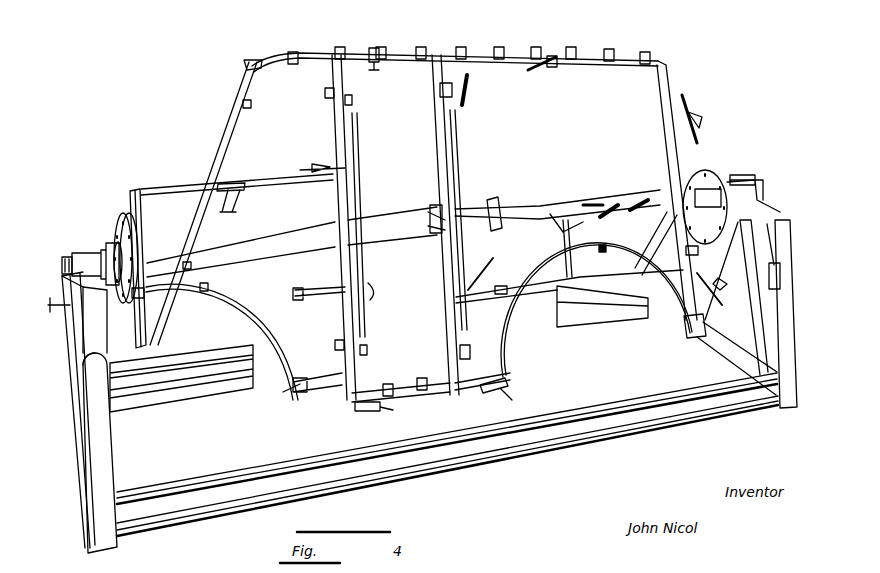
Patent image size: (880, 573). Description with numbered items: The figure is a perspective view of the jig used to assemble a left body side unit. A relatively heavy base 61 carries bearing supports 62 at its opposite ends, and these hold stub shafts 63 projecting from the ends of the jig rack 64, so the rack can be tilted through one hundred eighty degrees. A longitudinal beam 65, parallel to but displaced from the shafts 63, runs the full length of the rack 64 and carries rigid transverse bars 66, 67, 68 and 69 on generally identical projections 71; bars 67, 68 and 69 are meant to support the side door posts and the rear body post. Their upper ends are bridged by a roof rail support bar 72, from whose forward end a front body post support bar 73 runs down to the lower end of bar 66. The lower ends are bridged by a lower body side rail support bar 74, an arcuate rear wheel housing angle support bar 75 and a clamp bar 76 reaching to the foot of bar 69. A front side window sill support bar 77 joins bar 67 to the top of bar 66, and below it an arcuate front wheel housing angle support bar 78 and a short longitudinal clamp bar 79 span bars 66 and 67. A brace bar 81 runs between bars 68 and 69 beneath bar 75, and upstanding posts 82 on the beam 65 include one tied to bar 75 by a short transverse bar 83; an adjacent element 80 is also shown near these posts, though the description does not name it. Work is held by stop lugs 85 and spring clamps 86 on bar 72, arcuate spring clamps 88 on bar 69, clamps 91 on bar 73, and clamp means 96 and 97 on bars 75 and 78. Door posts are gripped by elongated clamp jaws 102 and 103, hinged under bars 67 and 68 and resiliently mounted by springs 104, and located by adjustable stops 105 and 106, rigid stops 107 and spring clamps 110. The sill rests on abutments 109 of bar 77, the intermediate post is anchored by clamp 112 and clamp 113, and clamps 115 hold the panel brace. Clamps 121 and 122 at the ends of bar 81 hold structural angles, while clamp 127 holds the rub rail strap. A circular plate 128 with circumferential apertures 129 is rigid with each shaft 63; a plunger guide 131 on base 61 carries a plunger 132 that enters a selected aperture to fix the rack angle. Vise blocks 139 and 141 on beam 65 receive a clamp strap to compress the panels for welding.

The base 61 is at (589, 437).
The bearing supports 62 is at (74, 254).
The stub shafts 63 is at (64, 259).
The jig rack 64 is at (602, 47).
The longitudinal beam 65 is at (551, 207).
The transverse bar 66 is at (146, 220).
The transverse bar 67 is at (335, 124).
The transverse bar 68 is at (435, 103).
The transverse bar 69 is at (660, 115).
The projections 71 is at (334, 255).
The roof rail support bar 72 is at (369, 47).
The front body post support bar 73 is at (235, 119).
The lower body side rail support bar 74 is at (438, 385).
The rear wheel housing angle support bar 75 is at (515, 352).
The clamp bar 76 is at (693, 342).
The front side window sill support bar 77 is at (269, 187).
The front wheel housing angle support bar 78 is at (263, 340).
The clamp bar 79 is at (325, 375).
The bracket 80 is at (579, 238).
The brace bar 81 is at (553, 288).
The upstanding posts 82 is at (598, 205).
The transverse bar 83 is at (571, 271).
The stop lugs 85 is at (292, 50).
The spring clamps 86 is at (534, 72).
The arcuate spring clamps 88 is at (691, 113).
The clamps 91 is at (251, 105).
The clamp means 96 is at (608, 248).
The clamp means 97 is at (209, 287).
The elongated clamp jaw 102 is at (365, 138).
The elongated clamp jaw 103 is at (455, 148).
The springs 104 is at (373, 284).
The adjustable stop 105 is at (324, 93).
The adjustable stop 106 is at (352, 99).
The rigid stops 107 is at (439, 86).
The abutments 109 is at (239, 183).
The spring clamps 110 is at (469, 88).
The clamp 112 is at (319, 297).
The clamp 113 is at (300, 385).
The clamps 115 is at (233, 212).
The clamp 121 is at (502, 287).
The clamp 122 is at (699, 251).
The clamp 127 is at (501, 206).
The circular plate 128 is at (125, 213).
The circumferential apertures 129 is at (119, 221).
The plunger guide 131 is at (109, 302).
The plunger 132 is at (144, 293).
The vise block 139 is at (430, 210).
The vise block 141 is at (740, 183).